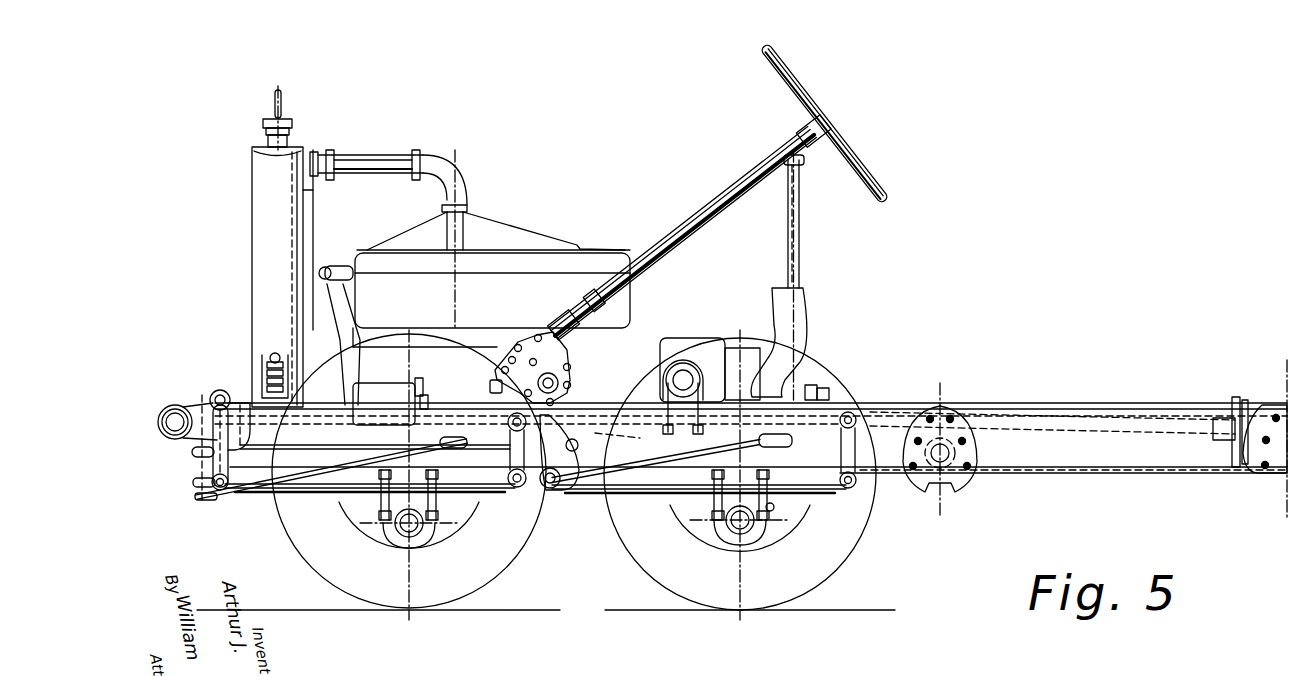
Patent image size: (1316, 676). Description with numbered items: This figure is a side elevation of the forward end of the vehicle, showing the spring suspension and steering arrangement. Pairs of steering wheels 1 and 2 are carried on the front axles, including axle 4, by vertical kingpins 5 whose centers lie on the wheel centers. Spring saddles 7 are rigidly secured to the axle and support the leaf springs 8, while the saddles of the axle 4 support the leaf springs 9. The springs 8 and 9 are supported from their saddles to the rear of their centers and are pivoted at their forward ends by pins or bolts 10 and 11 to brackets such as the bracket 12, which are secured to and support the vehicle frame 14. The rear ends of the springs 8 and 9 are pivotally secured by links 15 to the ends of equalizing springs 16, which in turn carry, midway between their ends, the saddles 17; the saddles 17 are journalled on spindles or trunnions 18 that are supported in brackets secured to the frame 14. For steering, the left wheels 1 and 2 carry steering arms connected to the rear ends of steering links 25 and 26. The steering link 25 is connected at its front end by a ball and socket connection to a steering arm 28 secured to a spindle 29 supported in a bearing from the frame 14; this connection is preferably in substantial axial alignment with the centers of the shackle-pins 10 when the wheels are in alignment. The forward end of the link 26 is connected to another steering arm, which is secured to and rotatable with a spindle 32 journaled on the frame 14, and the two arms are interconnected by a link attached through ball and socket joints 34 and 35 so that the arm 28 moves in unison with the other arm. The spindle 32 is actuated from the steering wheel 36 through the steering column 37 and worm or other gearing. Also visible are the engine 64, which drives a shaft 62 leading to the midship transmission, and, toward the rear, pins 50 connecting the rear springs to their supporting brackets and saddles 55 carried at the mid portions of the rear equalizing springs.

The steering wheels 1 is at (318, 575).
The steering wheels 2 is at (655, 584).
The axle 4 is at (762, 537).
The vertical kingpins 5 is at (440, 540).
The spring saddles 7 is at (400, 542).
The leaf springs 8 is at (318, 498).
The leaf springs 9 is at (618, 495).
The pins or bolts 10 is at (212, 500).
The pins or bolts 11 is at (545, 500).
The bracket 12 is at (205, 463).
The vehicle frame 14 is at (980, 403).
The links 15 is at (498, 498).
The equalizing springs 16 is at (636, 356).
The saddles 17 is at (785, 370).
The spindles or trunnions 18 is at (697, 367).
The steering link 25 is at (285, 500).
The steering link 26 is at (652, 497).
The steering arm 28 is at (205, 400).
The spindle 29 is at (225, 392).
The spindle 32 is at (580, 345).
The ball and socket joint 34 is at (212, 437).
The ball and socket joint 35 is at (600, 466).
The steering wheel 36 is at (792, 73).
The steering column 37 is at (717, 203).
The pins 50 is at (598, 436).
The saddles 55 is at (285, 478).
The shaft 62 is at (1098, 418).
The engine 64 is at (563, 257).